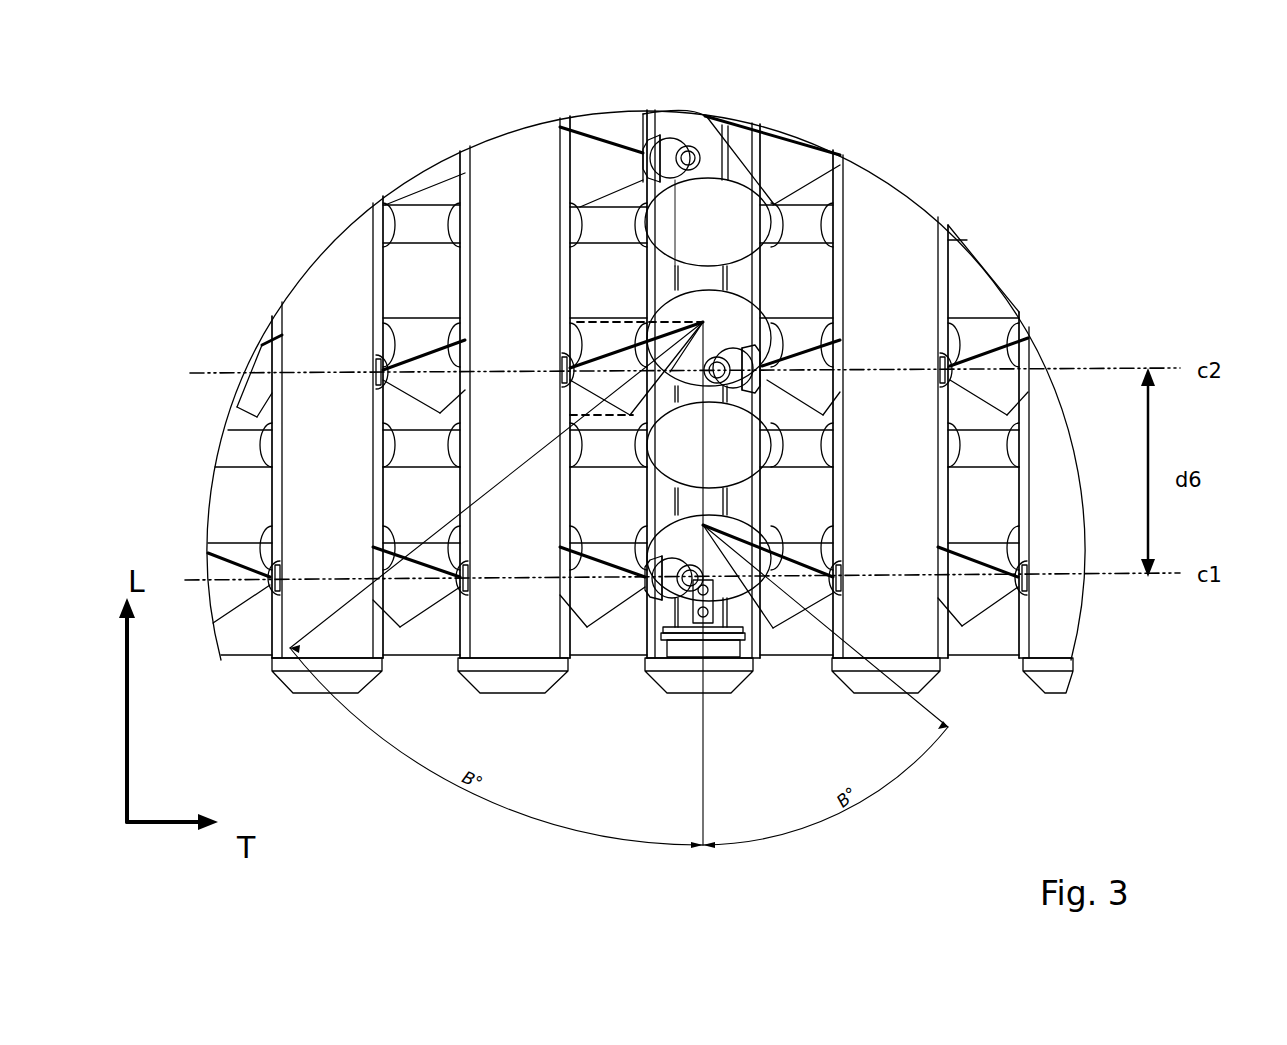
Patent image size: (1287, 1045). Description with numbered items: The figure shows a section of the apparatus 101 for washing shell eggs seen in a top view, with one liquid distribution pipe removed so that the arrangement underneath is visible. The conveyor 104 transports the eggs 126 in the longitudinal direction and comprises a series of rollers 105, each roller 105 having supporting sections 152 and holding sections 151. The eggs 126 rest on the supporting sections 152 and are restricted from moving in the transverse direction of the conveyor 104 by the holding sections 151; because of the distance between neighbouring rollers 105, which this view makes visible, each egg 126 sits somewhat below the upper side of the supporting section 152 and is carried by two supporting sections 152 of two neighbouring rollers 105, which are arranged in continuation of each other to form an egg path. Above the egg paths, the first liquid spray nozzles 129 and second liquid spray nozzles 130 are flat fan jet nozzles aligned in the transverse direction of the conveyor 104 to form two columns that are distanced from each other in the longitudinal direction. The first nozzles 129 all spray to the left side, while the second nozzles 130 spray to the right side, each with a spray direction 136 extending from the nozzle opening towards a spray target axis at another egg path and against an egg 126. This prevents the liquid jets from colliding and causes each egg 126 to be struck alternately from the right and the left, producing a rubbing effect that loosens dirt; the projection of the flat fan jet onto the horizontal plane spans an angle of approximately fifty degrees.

The apparatus for washing shell eggs 101 is at (410, 124).
The spray direction 136 is at (606, 372).
The egg 126 is at (710, 218).
The holding section 151 is at (700, 282).
The supporting section 152 is at (794, 278).
The second liquid spray nozzle 130 is at (735, 366).
The roller 105 is at (997, 280).
The conveyor 104 is at (999, 694).
The first liquid spray nozzle 129 is at (668, 585).